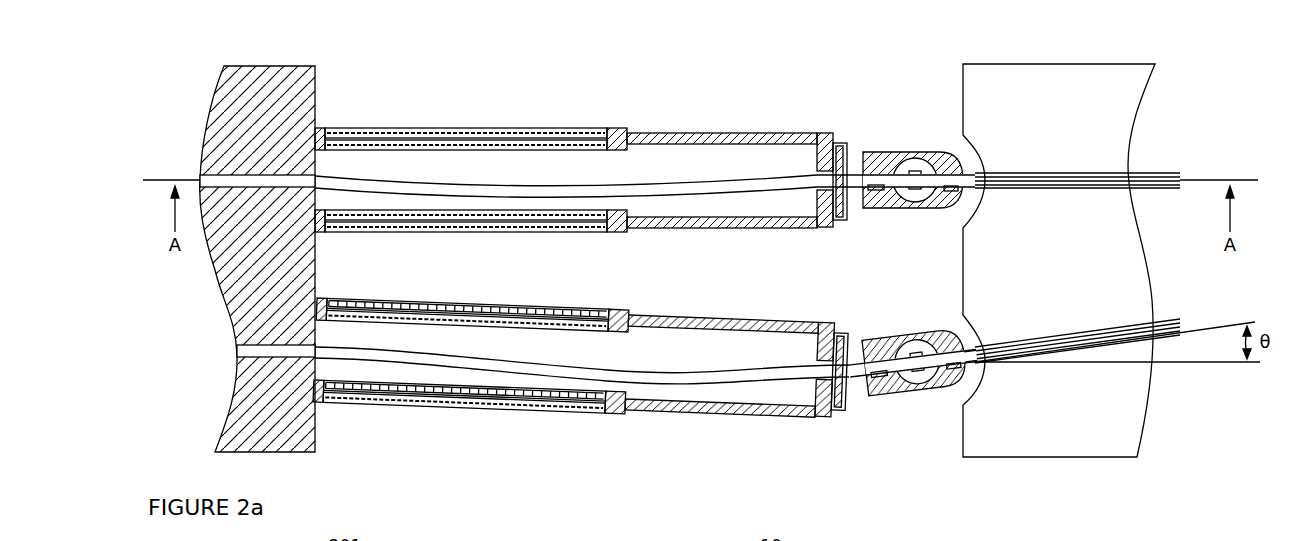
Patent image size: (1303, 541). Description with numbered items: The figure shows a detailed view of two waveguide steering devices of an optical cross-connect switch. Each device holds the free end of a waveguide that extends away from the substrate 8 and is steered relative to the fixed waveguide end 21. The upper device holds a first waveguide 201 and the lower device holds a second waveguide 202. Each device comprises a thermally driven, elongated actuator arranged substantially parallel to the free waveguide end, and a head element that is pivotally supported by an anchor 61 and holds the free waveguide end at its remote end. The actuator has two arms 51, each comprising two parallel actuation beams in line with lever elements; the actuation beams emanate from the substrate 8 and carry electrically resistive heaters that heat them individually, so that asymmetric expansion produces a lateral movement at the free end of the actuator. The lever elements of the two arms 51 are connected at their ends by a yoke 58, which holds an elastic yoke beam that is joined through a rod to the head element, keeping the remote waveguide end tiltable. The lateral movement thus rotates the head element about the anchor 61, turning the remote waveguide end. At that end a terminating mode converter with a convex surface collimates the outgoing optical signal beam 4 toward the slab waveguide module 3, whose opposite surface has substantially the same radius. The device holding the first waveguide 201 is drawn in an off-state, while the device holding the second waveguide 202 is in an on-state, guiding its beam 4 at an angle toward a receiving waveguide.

The slab waveguide module 3 is at (1088, 84).
The optical signal beam 4 is at (1073, 334).
The substrate 8 is at (272, 78).
The fixed waveguide end 21 is at (240, 188).
The arm 51 is at (695, 143).
The yoke 58 is at (818, 202).
The anchor 61 is at (906, 158).
The first waveguide 201 is at (806, 160).
The second waveguide 202 is at (805, 394).